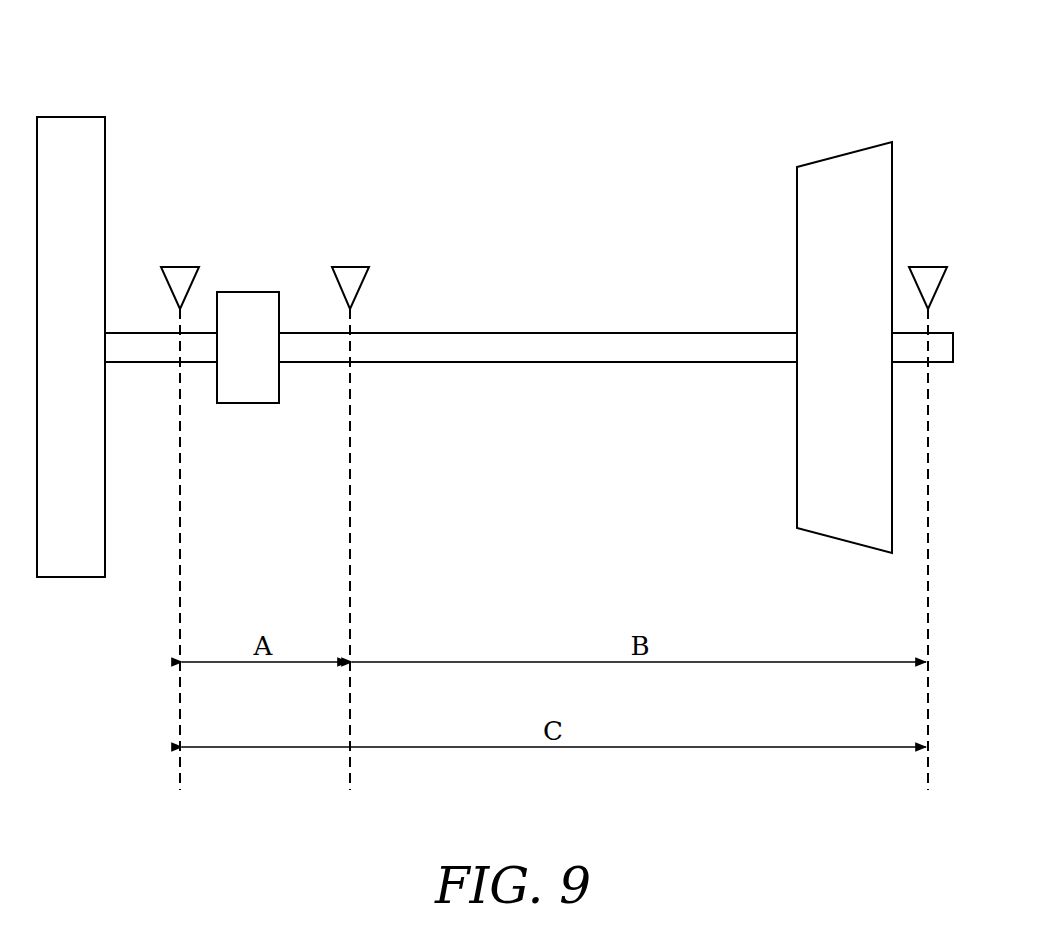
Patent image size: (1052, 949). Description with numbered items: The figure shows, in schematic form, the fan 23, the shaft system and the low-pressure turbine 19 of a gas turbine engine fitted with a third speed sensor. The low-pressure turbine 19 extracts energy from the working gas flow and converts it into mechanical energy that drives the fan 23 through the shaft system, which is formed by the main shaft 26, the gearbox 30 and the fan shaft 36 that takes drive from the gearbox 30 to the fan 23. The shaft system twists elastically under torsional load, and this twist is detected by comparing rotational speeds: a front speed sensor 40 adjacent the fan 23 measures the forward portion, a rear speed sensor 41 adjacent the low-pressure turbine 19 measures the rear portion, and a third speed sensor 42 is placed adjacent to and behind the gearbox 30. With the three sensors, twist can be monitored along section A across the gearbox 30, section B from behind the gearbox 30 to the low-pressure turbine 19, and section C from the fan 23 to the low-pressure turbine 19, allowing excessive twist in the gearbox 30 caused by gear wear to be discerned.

The fan 23 is at (69, 100).
The low-pressure turbine 19 is at (841, 112).
The main shaft 26 is at (481, 376).
The fan shaft 36 is at (140, 366).
The gearbox 30 is at (245, 416).
The front speed sensor 40 is at (180, 266).
The third speed sensor 42 is at (351, 266).
The rear speed sensor 41 is at (928, 266).